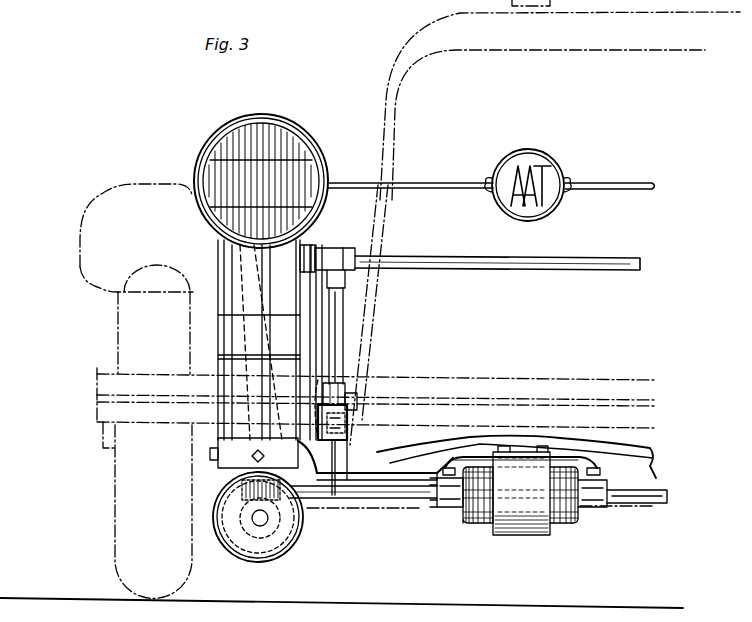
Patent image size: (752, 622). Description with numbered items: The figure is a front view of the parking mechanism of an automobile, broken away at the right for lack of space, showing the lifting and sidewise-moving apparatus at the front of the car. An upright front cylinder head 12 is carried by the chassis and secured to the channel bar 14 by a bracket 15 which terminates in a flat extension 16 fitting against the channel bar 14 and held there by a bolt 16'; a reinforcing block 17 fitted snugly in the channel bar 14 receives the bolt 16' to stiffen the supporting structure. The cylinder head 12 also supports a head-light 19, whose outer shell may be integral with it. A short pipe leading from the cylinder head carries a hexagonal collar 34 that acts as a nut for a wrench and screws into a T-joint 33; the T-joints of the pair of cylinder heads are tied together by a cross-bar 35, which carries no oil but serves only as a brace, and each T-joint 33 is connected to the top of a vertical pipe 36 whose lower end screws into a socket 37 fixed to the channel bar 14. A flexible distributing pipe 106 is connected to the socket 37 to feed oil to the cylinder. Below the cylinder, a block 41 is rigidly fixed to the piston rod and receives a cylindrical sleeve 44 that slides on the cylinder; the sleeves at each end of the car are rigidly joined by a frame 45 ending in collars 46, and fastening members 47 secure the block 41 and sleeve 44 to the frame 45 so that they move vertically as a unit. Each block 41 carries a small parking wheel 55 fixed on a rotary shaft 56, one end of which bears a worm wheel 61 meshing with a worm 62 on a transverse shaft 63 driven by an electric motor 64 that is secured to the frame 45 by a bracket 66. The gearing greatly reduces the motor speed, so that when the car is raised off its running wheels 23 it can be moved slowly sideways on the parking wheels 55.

The front cylinder head 12 is at (236, 263).
The channel bar 14 is at (335, 493).
The bracket 15 is at (228, 336).
The flat extension 16 is at (359, 379).
The bolt 16' is at (366, 450).
The reinforcing block 17 is at (342, 434).
The head-light 19 is at (327, 147).
The running wheel 23 is at (115, 478).
The T-joint 33 is at (340, 250).
The hexagonal collar 34 is at (318, 250).
The cross-bar 35 is at (548, 258).
The vertical pipe 36 is at (340, 308).
The socket 37 is at (346, 392).
The block 41 is at (236, 507).
The sleeve 44 is at (242, 353).
The frame 45 is at (432, 463).
The collar 46 is at (238, 456).
The fastening member 47 is at (224, 452).
The parking wheel 55 is at (228, 548).
The rotary shaft 56 is at (264, 522).
The worm wheel 61 is at (252, 538).
The worm 62 is at (240, 492).
The transverse shaft 63 is at (400, 508).
The electric motor 64 is at (478, 526).
The bracket 66 is at (520, 535).
The distributing pipe 106 is at (358, 400).